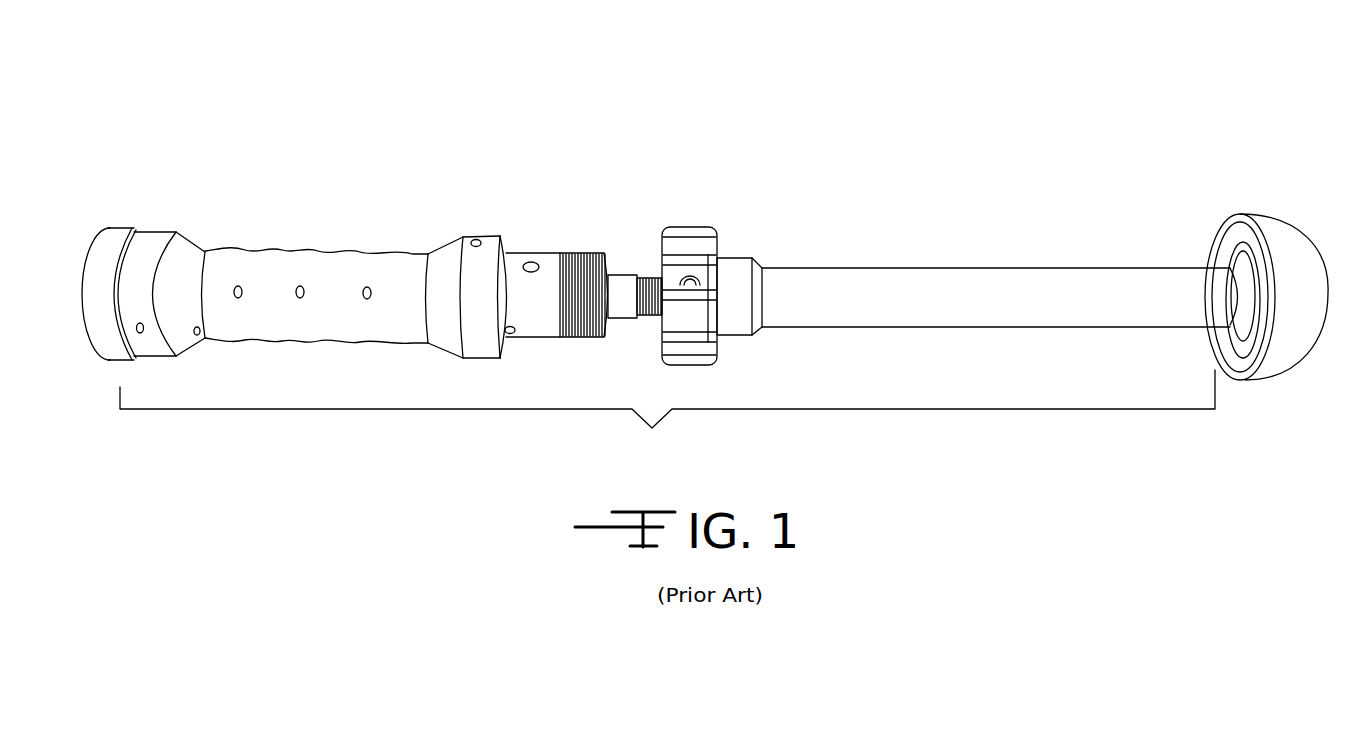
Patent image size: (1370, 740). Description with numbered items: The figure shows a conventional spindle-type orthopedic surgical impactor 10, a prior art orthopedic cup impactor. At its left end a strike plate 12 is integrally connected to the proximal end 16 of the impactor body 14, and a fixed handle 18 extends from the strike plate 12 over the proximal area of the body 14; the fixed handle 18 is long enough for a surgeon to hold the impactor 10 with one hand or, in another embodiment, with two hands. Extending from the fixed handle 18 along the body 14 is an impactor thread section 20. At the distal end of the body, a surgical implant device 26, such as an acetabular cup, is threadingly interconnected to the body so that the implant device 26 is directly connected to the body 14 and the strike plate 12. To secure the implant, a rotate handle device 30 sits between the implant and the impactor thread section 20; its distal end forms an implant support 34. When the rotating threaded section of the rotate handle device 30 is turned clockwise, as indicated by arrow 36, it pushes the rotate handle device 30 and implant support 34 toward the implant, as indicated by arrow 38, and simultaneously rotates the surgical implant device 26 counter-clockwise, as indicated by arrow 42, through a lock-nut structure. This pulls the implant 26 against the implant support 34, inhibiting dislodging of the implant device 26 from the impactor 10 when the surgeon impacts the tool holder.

The spindle-type orthopedic surgical impactor 10 is at (975, 105).
The strike plate 12 is at (95, 237).
The impactor body 14 is at (667, 414).
The proximal end 16 is at (118, 358).
The fixed handle 18 is at (350, 245).
The impactor thread section 20 is at (647, 318).
The surgical implant device 26 is at (1287, 343).
The rotate handle device 30 is at (823, 268).
The implant support 34 is at (1243, 252).
The arrow indicating clockwise rotation 36 is at (652, 212).
The arrow indicating pushing movement 38 is at (937, 232).
The arrow indicating counter-clockwise rotation 42 is at (1332, 253).